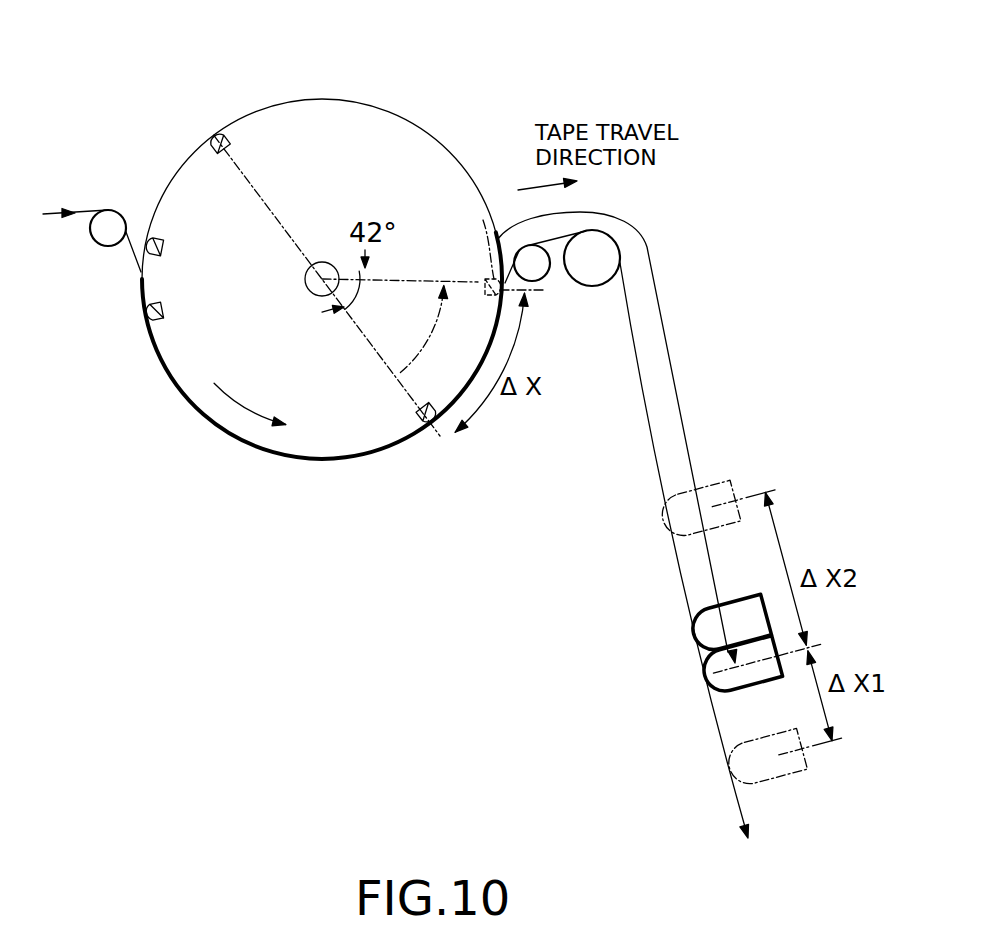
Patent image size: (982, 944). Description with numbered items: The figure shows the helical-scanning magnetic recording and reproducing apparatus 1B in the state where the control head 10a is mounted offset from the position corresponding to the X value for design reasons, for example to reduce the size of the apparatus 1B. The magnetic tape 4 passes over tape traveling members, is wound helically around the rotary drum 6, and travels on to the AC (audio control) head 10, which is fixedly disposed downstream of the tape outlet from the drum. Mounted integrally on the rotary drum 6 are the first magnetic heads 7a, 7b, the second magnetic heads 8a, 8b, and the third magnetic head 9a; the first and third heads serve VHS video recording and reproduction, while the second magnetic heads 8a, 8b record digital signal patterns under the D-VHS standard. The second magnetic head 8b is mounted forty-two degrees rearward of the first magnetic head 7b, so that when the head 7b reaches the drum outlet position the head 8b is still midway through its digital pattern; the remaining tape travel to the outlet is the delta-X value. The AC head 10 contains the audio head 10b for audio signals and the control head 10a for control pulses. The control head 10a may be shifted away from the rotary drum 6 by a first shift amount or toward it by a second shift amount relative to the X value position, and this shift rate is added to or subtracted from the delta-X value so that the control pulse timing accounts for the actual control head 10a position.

The magnetic recording and reproducing apparatus 1B is at (87, 54).
The rotary drum 6 is at (358, 100).
The magnetic tape 4 is at (104, 210).
The 1ch second magnetic head 8a is at (216, 134).
The 2ch second magnetic head 8b is at (436, 428).
The 1ch first magnetic head 7a is at (150, 236).
The 2ch first magnetic head 7b is at (476, 266).
The third magnetic head 9a is at (146, 316).
The X value X is at (683, 395).
The AC (audio control) head 10 is at (600, 632).
The control head 10a is at (722, 472).
The audio head 10b is at (705, 635).